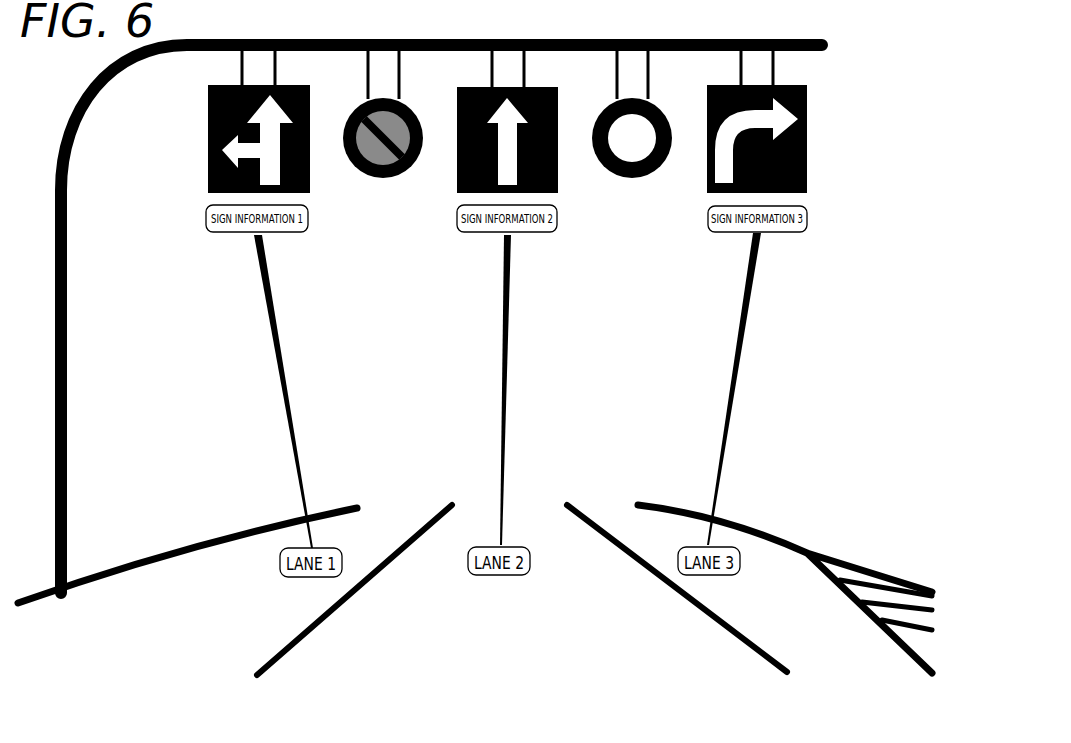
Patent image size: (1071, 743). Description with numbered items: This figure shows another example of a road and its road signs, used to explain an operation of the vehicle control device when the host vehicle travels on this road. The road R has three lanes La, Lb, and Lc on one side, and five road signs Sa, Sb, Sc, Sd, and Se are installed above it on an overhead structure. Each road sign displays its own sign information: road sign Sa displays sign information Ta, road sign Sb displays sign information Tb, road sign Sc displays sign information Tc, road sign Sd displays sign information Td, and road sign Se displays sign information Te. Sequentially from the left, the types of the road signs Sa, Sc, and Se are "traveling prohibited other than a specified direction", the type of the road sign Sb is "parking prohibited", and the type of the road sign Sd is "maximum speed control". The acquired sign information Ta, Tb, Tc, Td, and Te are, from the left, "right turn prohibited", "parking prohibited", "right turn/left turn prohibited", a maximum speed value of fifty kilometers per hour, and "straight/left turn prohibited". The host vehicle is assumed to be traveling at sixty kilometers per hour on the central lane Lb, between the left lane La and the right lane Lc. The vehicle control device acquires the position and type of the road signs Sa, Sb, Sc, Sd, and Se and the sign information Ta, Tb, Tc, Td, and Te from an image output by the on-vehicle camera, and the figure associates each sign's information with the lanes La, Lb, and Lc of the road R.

The road sign Sa is at (311, 104).
The road sign Sb is at (408, 102).
The road sign Sc is at (559, 104).
The road sign Sd is at (659, 103).
The road sign Se is at (807, 104).
The sign information Ta is at (222, 150).
The sign information Tb is at (410, 135).
The sign information Tc is at (511, 142).
The sign information Td is at (652, 138).
The sign information Te is at (783, 124).
The road R is at (211, 540).
The lane La is at (198, 647).
The central lane Lb is at (498, 648).
The lane Lc is at (827, 628).